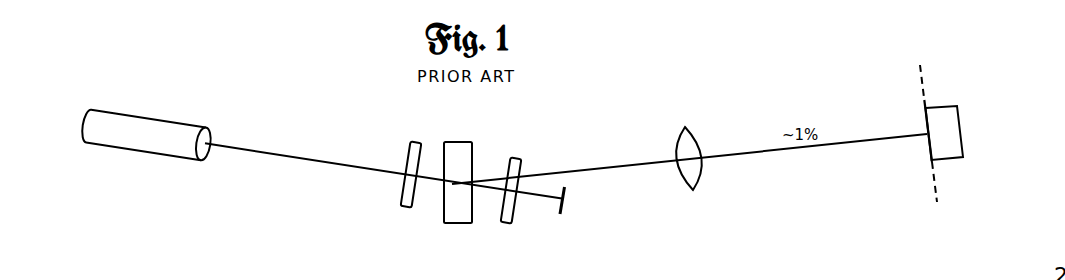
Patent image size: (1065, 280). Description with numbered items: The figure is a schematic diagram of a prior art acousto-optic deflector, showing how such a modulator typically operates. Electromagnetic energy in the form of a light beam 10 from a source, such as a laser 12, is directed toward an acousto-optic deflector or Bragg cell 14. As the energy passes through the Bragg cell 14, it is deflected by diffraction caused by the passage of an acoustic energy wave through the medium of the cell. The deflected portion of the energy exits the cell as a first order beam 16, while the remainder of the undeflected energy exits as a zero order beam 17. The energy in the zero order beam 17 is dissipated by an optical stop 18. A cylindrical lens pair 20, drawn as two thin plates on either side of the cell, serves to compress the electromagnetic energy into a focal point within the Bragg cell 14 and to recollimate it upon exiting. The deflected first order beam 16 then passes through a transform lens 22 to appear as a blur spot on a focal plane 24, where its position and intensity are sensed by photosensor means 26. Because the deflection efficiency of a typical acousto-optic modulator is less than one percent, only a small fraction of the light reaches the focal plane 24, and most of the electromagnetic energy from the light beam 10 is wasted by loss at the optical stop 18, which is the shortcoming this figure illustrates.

The light beam 10 is at (283, 155).
The laser 12 is at (158, 120).
The Bragg cell 14 is at (455, 223).
The first order beam 16 is at (602, 168).
The zero order beam 17 is at (530, 195).
The optical stop 18 is at (565, 195).
The cylindrical lens pair 20 is at (515, 159).
The transform lens 22 is at (697, 142).
The focal plane 24 is at (923, 103).
The photosensor means 26 is at (962, 130).